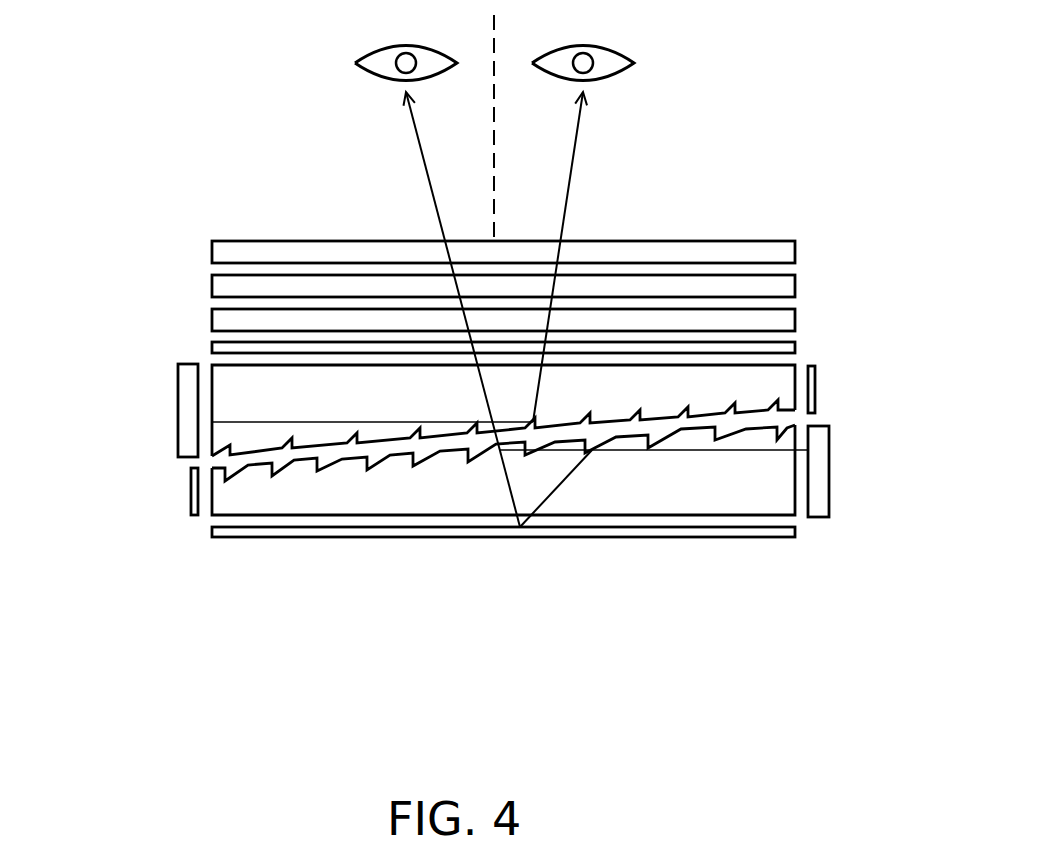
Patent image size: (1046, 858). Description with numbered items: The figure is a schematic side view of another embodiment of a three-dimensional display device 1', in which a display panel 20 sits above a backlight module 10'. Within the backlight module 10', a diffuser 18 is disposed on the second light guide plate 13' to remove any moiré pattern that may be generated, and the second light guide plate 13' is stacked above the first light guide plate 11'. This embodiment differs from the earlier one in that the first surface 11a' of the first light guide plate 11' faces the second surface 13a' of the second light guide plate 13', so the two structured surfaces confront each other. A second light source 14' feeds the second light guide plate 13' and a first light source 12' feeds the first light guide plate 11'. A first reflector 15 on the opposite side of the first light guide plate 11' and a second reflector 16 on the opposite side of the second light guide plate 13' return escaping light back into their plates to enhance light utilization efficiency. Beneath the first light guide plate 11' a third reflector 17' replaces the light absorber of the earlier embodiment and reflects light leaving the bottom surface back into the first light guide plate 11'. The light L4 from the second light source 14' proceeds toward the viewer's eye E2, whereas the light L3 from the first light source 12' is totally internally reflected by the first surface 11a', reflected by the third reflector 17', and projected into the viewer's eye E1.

The 3D display device 1' is at (160, 188).
The display panel 20 is at (85, 242).
The backlight module 10' is at (59, 441).
The diffuser 18 is at (787, 350).
The second light guide plate 13' is at (447, 410).
The second surface of the second light guide plate 13a' is at (503, 531).
The second light source 14' is at (316, 410).
The first light guide plate 11' is at (558, 470).
The first surface of the first light guide plate 11a' is at (503, 544).
The first light source 12' is at (701, 471).
The second reflector 16 is at (815, 387).
The first reflector 15 is at (195, 482).
The third reflector 17' is at (447, 528).
The right eye E1 is at (357, 63).
The left eye E2 is at (633, 63).
The light L3 is at (421, 150).
The light L4 is at (574, 153).